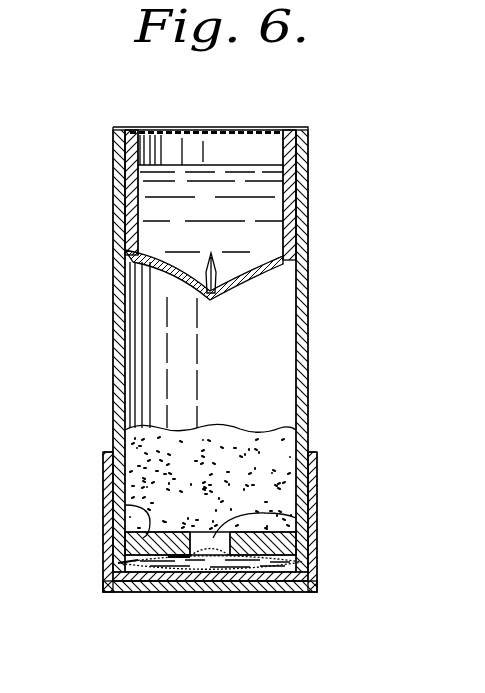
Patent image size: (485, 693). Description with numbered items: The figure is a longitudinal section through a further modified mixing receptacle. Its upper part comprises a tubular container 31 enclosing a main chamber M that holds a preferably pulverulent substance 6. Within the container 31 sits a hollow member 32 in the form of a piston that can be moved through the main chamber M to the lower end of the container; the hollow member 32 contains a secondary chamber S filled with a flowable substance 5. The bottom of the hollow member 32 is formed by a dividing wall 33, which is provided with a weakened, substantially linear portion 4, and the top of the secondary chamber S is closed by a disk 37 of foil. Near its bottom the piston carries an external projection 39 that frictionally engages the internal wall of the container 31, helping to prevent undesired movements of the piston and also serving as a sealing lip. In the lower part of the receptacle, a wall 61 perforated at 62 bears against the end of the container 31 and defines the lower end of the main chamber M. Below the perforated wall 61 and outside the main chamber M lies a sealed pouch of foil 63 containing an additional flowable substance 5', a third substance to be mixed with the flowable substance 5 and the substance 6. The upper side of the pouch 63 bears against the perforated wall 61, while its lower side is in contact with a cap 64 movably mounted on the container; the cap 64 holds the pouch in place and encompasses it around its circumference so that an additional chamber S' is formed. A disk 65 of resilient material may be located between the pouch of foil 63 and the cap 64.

The tubular container 31 is at (314, 418).
The hollow member 32 is at (308, 193).
The dividing wall 33 is at (297, 288).
The disk of foil 37 is at (197, 128).
The external projection 39 is at (291, 262).
The secondary chamber S is at (212, 122).
The flowable substance 5 is at (165, 205).
The weakened substantially linear portion 4 is at (206, 268).
The main chamber M is at (260, 364).
The substance 6 is at (160, 441).
The perforated wall 61 is at (123, 507).
The perforation 62 is at (300, 522).
The sealed pouch of foil 63 is at (287, 567).
The cap 64 is at (308, 495).
The disk of resilient material 65 is at (187, 581).
The additional flowable substance 5' is at (210, 595).
The additional chamber S' is at (91, 616).